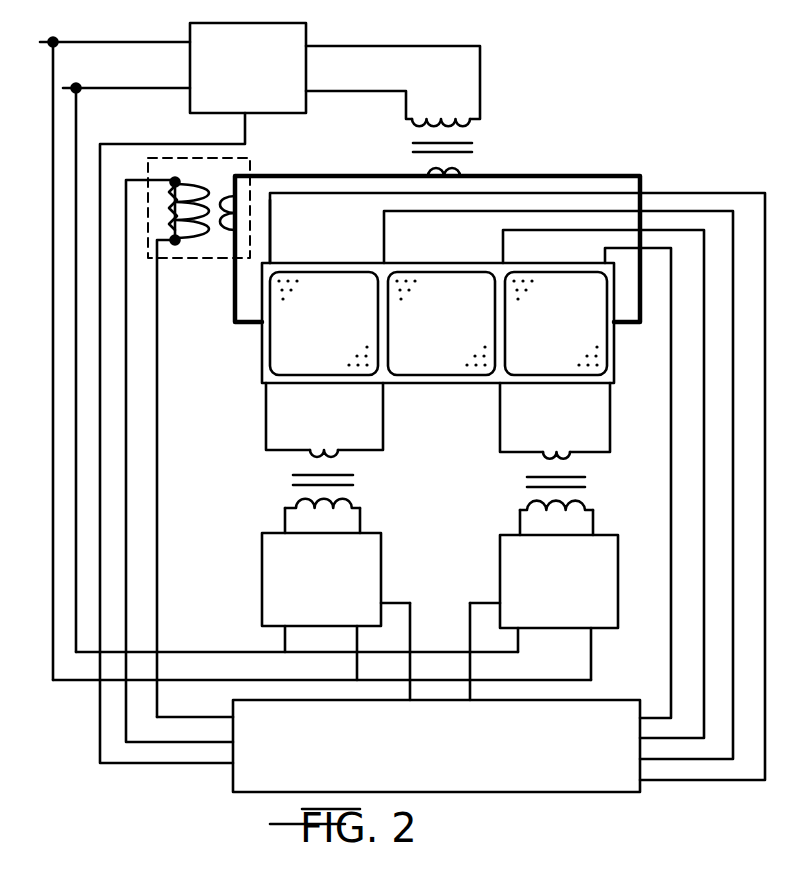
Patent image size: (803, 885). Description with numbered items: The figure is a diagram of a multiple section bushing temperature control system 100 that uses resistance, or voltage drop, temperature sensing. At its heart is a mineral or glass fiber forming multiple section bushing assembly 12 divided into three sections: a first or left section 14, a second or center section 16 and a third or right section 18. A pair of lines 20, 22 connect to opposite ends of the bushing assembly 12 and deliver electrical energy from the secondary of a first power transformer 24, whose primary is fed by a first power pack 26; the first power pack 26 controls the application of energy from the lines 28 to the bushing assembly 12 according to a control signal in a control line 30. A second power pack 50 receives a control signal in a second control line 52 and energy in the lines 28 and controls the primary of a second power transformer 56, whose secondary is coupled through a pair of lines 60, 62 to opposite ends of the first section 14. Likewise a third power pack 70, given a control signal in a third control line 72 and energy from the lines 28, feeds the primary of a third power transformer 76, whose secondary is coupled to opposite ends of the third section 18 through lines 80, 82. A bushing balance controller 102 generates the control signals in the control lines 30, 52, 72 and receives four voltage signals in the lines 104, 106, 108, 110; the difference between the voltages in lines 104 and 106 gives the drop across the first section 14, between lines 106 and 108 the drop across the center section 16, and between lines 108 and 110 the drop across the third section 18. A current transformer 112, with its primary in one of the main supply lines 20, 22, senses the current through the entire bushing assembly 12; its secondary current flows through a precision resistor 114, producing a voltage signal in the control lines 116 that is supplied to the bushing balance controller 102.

The multiple section bushing temperature control system 100 is at (614, 122).
The multiple section bushing assembly 12 is at (432, 454).
The first or left section 14 is at (310, 338).
The second or center section 16 is at (428, 338).
The third or right section 18 is at (543, 338).
The line 20 is at (362, 170).
The line 22 is at (625, 176).
The first power transformer 24 is at (500, 120).
The first power pack 26 is at (236, 82).
The lines 28 is at (165, 88).
The control line 30 is at (154, 770).
The second power pack 50 is at (336, 592).
The second control line 52 is at (410, 600).
The second power transformer 56 is at (272, 456).
The line 60 is at (266, 413).
The line 62 is at (386, 427).
The third power pack 70 is at (574, 594).
The third control line 72 is at (478, 597).
The third power transformer 76 is at (600, 456).
The line 80 is at (500, 420).
The line 82 is at (612, 412).
The bushing balance controller 102 is at (460, 770).
The line 104 is at (278, 250).
The line 106 is at (390, 258).
The line 108 is at (505, 260).
The line 110 is at (672, 305).
The current transformer 112 is at (245, 158).
The precision resistor 114 is at (170, 244).
The control lines 116 is at (126, 552).